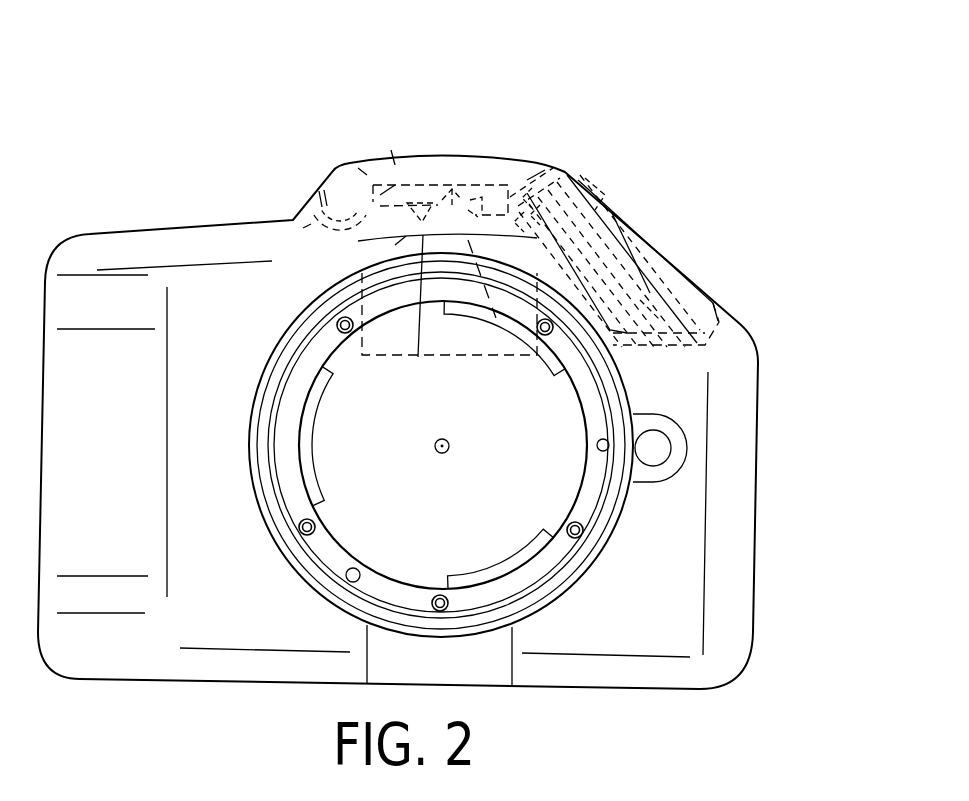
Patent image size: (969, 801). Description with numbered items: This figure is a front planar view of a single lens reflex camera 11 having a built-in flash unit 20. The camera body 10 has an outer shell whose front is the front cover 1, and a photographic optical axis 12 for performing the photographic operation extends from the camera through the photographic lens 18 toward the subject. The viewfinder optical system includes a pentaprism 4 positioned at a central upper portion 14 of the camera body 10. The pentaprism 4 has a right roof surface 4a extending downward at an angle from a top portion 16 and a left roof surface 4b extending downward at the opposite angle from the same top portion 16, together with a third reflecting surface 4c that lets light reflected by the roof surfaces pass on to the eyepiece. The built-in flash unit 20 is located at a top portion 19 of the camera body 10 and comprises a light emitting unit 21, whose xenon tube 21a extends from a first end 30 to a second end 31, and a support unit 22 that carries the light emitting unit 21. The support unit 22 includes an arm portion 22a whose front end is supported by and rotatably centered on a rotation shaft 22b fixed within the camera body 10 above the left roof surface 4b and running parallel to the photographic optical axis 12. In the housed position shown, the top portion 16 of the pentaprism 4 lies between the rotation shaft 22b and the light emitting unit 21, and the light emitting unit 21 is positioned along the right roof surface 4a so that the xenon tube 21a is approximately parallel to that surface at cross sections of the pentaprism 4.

The front cover 1 is at (733, 375).
The pentaprism 4 is at (445, 358).
The right roof surface 4a is at (537, 148).
The left roof surface 4b is at (386, 140).
The third reflecting surface 4c is at (398, 330).
The camera body 10 is at (755, 528).
The single lens reflex camera 11 is at (735, 106).
The photographic optical axis 12 is at (438, 452).
The central upper portion 14 is at (418, 357).
The top portion 16 is at (496, 318).
The photographic lens 18 is at (332, 543).
The top portion 19 is at (630, 226).
The built-in flash unit 20 is at (432, 153).
The light emitting unit 21 is at (613, 200).
The xenon tube 21a is at (665, 235).
The support unit 22 is at (503, 160).
The arm portion 22a is at (453, 167).
The rotation shaft 22b is at (343, 188).
The first end 30 is at (597, 172).
The second end 31 is at (675, 257).